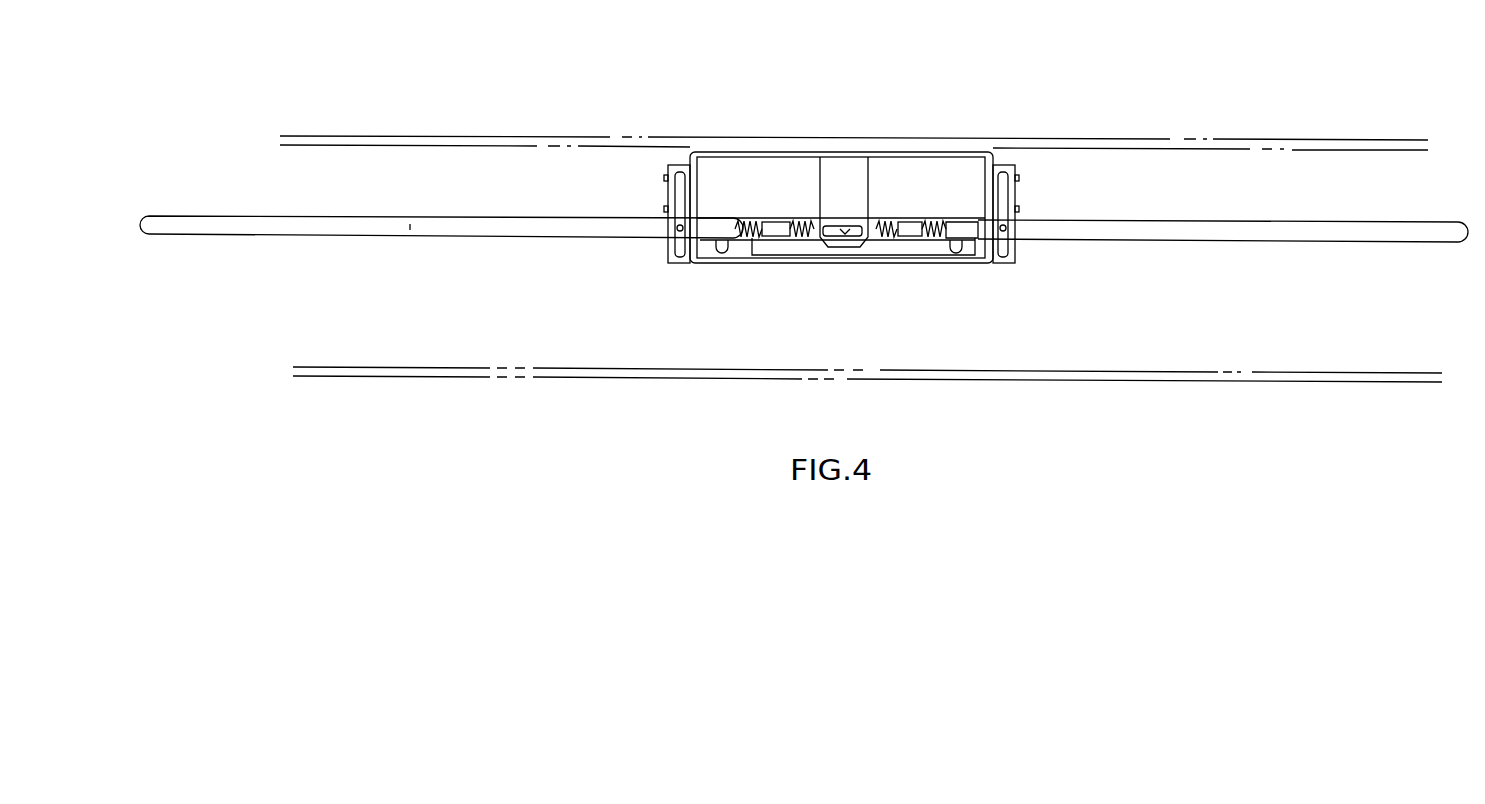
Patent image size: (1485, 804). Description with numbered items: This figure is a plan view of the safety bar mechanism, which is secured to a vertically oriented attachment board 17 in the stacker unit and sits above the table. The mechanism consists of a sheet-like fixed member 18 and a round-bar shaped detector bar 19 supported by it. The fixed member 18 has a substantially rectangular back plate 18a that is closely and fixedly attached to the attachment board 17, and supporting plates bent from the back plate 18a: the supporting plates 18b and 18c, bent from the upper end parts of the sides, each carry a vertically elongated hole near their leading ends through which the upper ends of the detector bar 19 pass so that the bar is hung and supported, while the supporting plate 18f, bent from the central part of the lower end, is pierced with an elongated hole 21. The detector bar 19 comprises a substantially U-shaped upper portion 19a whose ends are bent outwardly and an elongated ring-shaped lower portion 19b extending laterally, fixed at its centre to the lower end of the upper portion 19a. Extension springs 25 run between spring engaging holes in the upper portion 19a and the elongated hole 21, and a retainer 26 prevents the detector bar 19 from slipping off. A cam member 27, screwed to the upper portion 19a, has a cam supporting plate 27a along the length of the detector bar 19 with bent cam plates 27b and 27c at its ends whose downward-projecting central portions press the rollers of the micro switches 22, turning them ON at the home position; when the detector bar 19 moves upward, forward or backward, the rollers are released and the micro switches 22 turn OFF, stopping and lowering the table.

The attachment board 17 is at (1057, 138).
The fixed member 18 is at (969, 147).
The back plate 18a is at (890, 150).
The supporting plate 18b is at (681, 265).
The supporting plate 18c is at (1003, 262).
The supporting plate 18f is at (830, 177).
The detector bar 19 is at (1234, 250).
The upper portion 19a is at (973, 238).
The lower portion 19b is at (480, 238).
The elongated hole 21 is at (845, 240).
The micro switch 22 is at (668, 191).
The extension spring 25 is at (745, 250).
The retainer 26 is at (703, 222).
The cam member 27 is at (929, 272).
The cam supporting plate 27a is at (792, 262).
The cam plate 27b is at (674, 250).
The cam plate 27c is at (1010, 244).